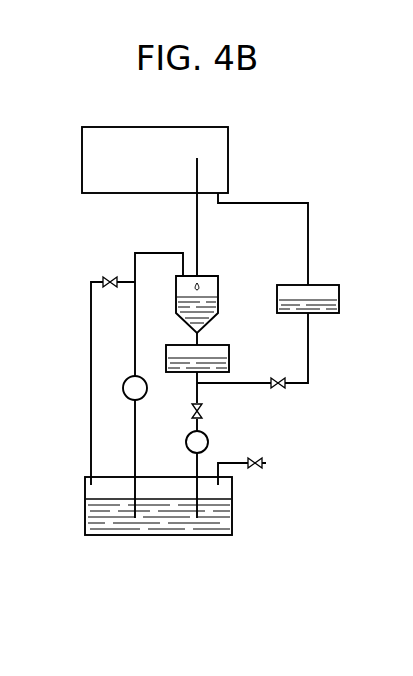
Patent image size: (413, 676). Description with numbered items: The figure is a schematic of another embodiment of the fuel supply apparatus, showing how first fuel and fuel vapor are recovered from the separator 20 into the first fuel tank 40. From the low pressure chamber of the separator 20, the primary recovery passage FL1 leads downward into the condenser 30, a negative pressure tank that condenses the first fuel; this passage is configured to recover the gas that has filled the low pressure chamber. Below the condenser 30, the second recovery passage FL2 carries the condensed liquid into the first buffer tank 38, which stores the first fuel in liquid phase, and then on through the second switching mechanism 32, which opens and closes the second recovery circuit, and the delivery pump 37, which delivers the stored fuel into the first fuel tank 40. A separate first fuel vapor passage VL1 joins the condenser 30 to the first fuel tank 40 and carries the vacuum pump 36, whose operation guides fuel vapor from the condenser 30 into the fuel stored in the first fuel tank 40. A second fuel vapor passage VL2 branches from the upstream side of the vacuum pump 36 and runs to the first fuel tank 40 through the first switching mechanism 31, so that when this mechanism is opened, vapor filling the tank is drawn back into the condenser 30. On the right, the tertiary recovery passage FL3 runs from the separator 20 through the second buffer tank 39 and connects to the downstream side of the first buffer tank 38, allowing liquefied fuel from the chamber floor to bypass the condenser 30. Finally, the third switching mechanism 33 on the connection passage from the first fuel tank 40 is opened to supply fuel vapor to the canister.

The separator 20 is at (188, 127).
The condenser 30 is at (210, 276).
The first switching mechanism 31 is at (108, 279).
The second switching mechanism 32 is at (204, 409).
The third switching mechanism 33 is at (258, 470).
The vacuum pump 36 is at (149, 376).
The delivery pump 37 is at (208, 434).
The first buffer tank 38 is at (218, 345).
The second buffer tank 39 is at (344, 286).
The first fuel tank 40 is at (117, 535).
The primary recovery passage FL1 is at (200, 228).
The second recovery passage FL2 is at (197, 381).
The tertiary recovery passage FL3 is at (282, 201).
The first fuel vapor passage VL1 is at (135, 318).
The second fuel vapor passage VL2 is at (91, 380).